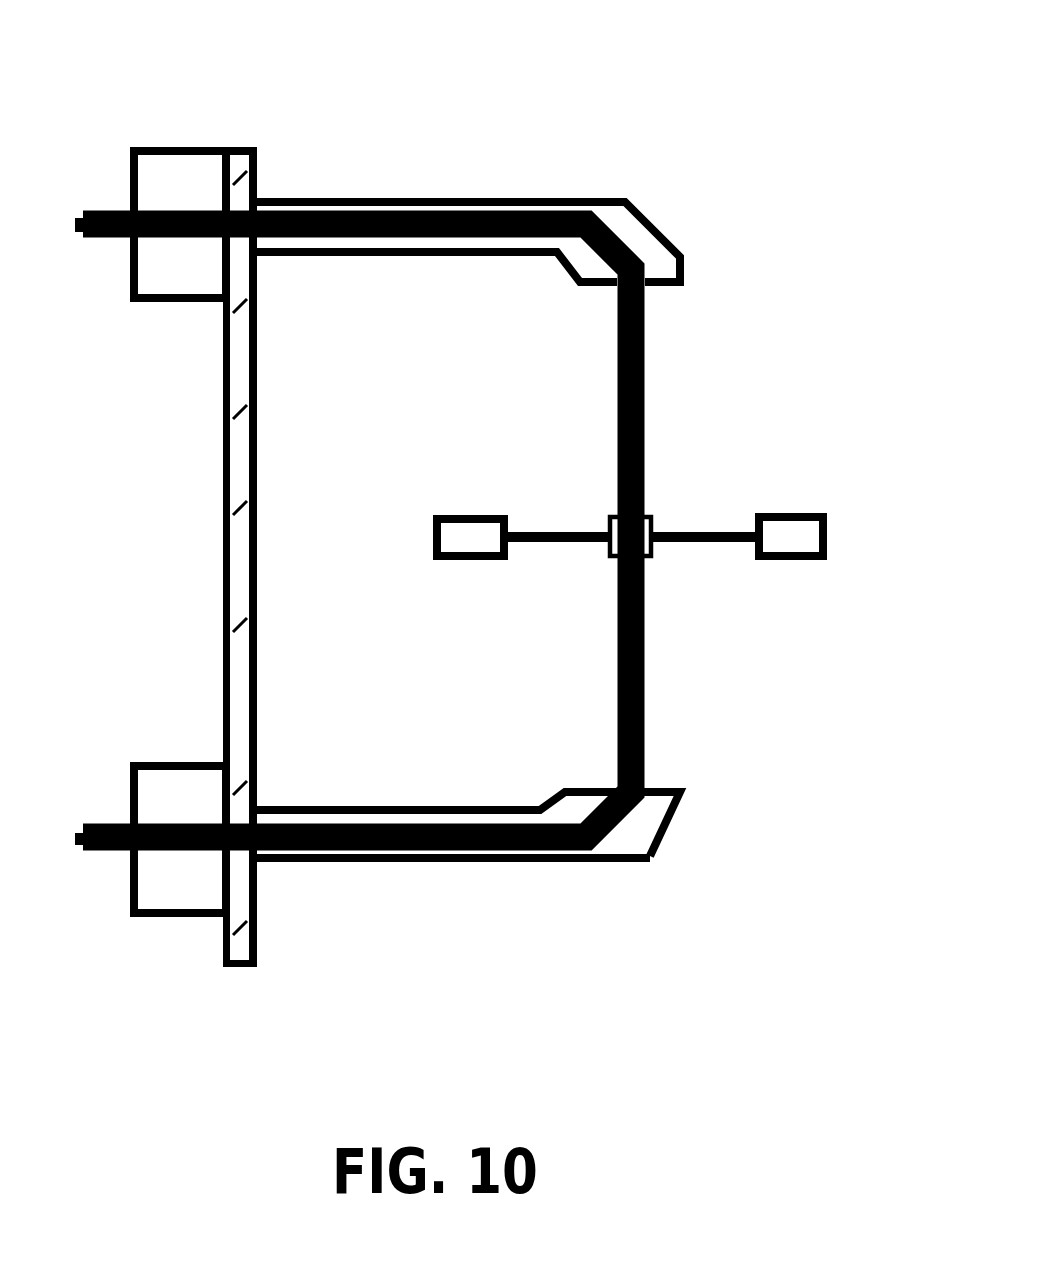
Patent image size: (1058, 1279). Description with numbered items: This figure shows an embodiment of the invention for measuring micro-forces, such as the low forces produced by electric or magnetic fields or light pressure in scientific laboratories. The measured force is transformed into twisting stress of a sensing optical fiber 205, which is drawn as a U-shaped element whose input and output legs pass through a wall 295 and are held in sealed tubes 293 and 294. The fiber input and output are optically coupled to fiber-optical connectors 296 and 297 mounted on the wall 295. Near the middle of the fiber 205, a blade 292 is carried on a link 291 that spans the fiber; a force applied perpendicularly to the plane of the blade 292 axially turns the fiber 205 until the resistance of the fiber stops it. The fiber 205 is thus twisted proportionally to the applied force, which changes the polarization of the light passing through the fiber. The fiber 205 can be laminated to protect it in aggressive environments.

The sensing optical fiber 205 is at (650, 428).
The bracket and link rods 291 is at (695, 543).
The blade 292 is at (785, 508).
The sealed tube 293 is at (650, 207).
The sealed tube 294 is at (647, 860).
The wall 295 is at (262, 952).
The fiber-optical connector 296 is at (153, 138).
The fiber-optical connector 297 is at (172, 917).